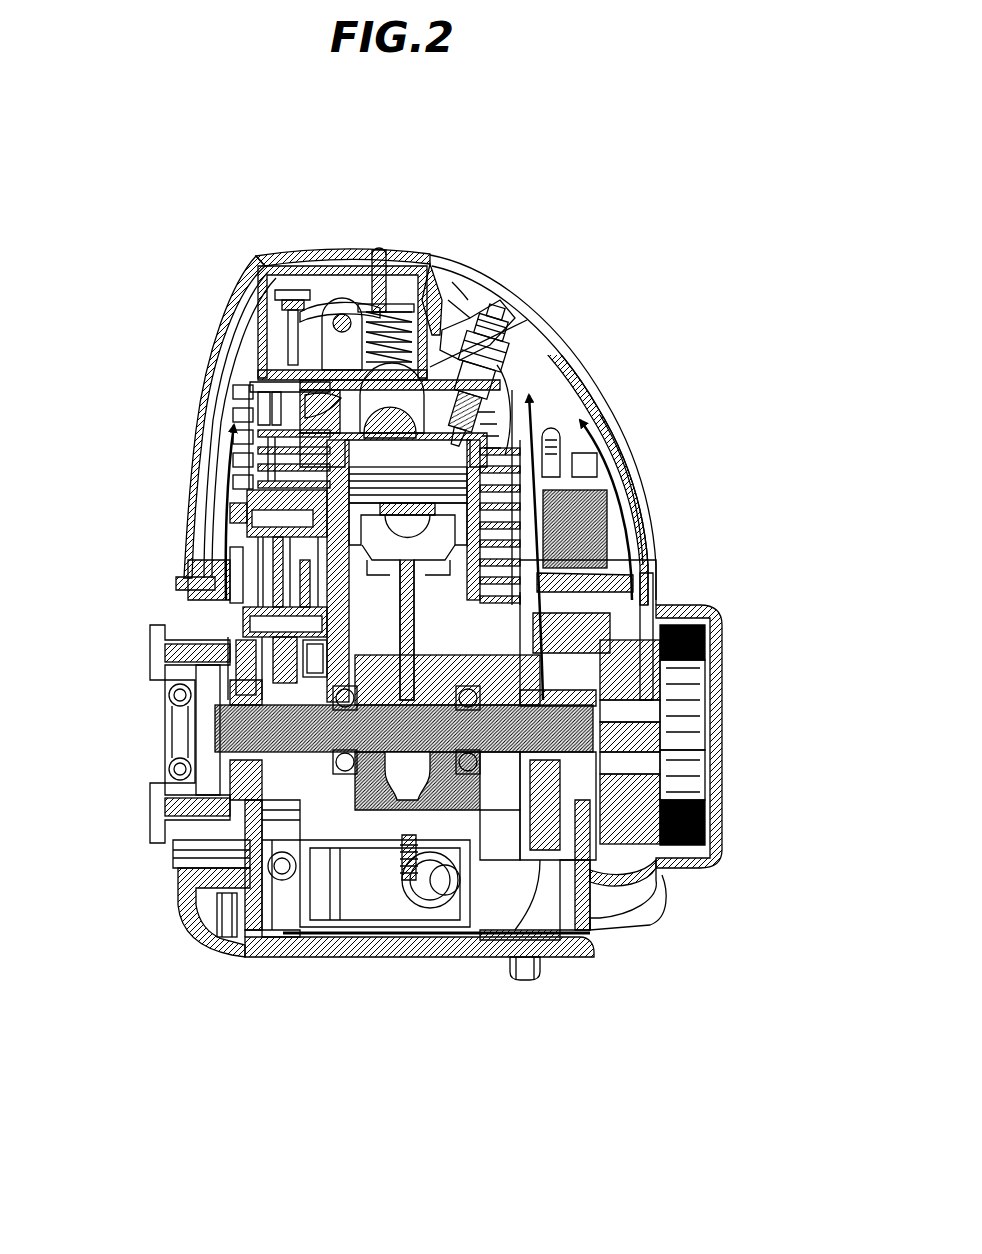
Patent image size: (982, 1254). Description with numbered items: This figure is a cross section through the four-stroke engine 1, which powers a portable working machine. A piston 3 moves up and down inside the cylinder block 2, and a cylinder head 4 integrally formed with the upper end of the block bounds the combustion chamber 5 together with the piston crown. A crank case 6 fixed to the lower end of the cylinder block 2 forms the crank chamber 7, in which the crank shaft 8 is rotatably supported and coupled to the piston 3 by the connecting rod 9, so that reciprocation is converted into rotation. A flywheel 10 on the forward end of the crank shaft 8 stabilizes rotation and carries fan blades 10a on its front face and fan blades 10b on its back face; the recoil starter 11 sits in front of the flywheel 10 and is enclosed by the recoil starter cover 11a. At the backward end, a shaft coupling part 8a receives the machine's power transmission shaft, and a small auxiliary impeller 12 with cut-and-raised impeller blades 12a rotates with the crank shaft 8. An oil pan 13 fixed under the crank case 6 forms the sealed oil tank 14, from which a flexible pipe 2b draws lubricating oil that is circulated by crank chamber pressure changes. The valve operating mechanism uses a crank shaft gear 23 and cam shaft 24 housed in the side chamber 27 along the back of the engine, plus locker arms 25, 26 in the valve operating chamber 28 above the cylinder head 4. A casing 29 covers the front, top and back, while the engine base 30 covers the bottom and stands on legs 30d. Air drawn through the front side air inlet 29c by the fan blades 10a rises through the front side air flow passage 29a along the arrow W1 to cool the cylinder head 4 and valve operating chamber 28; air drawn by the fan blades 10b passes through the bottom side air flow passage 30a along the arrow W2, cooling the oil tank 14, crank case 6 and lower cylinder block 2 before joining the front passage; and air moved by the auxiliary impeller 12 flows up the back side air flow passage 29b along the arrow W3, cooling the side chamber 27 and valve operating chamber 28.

The four-stroke engine 1 is at (452, 246).
The cylinder block 2 is at (632, 578).
The flexible pipe 2b is at (418, 922).
The piston 3 is at (513, 383).
The cylinder head 4 is at (448, 325).
The combustion chamber 5 is at (373, 437).
The crank case 6 is at (593, 928).
The crank chamber 7 is at (568, 936).
The crank shaft 8 is at (218, 790).
The shaft coupling part 8a is at (222, 770).
The connecting rod 9 is at (292, 568).
The flywheel 10 is at (688, 786).
The fan blades 10a is at (704, 830).
The fan blades 10b is at (676, 760).
The recoil starter 11 is at (667, 692).
The recoil starter cover 11a is at (726, 650).
The auxiliary impeller 12 is at (241, 942).
The impeller blades 12a is at (268, 870).
The oil pan 13 is at (493, 958).
The oil tank 14 is at (350, 900).
The crank shaft gear 23 is at (160, 737).
The cam shaft 24 is at (280, 618).
The locker arm 25 is at (394, 277).
The locker arm 26 is at (376, 306).
The side chamber 27 is at (275, 546).
The valve operating chamber 28 is at (297, 284).
The casing 29 is at (288, 258).
The front side air flow passage 29a is at (625, 505).
The back side air flow passage 29b is at (205, 500).
The front side air inlet 29c is at (706, 852).
The engine base 30 is at (474, 958).
The bottom side air flow passage 30a is at (294, 942).
The legs 30d is at (530, 975).
The cooling air flow 1 W1 is at (630, 492).
The cooling air flow 2 W2 is at (530, 412).
The arrow W3 is at (218, 455).